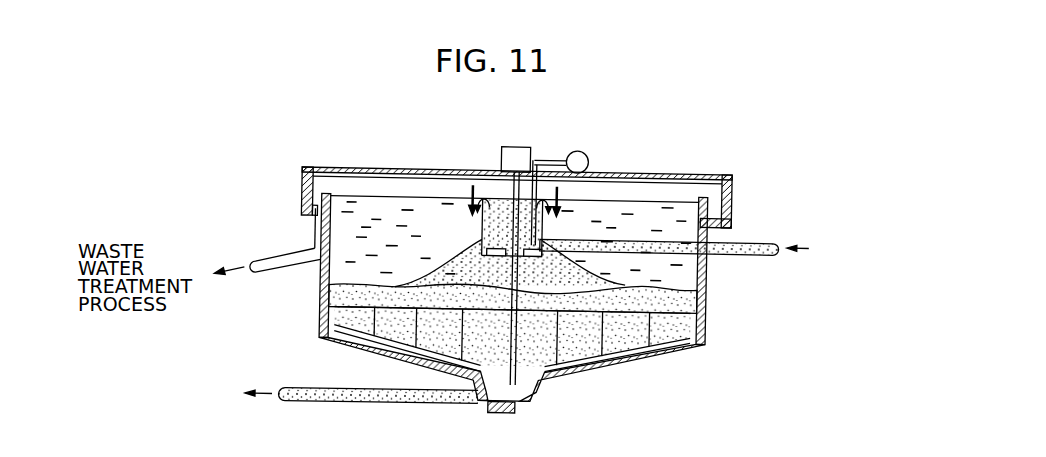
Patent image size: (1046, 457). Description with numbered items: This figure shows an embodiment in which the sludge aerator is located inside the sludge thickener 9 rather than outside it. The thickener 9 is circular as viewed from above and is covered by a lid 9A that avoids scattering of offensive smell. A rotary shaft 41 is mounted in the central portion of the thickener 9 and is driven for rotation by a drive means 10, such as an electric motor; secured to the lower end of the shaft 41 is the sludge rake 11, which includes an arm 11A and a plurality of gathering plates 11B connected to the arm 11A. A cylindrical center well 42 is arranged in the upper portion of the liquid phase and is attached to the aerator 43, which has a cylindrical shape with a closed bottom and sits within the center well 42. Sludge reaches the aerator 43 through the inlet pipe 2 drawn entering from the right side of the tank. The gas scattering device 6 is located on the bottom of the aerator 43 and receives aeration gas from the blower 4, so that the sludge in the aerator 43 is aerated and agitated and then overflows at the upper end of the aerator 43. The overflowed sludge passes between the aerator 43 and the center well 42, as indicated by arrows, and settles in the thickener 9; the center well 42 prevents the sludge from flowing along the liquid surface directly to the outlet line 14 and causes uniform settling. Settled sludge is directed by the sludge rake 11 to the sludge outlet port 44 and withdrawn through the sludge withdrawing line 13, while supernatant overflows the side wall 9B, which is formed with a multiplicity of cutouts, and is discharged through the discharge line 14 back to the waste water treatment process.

The raw water feed pipe 2 is at (750, 250).
The blower 4 is at (583, 154).
The gas scattering device 6 is at (546, 240).
The thickener 9 is at (706, 321).
The lid 9A is at (386, 171).
The side wall 9B is at (310, 204).
The drive means 10 is at (512, 147).
The sludge rake 11 is at (556, 364).
The arm 11A is at (601, 353).
The gathering plates 11B is at (641, 353).
The sludge withdrawing line 13 is at (364, 405).
The discharge line 14 is at (283, 271).
The rotary shaft 41 is at (520, 266).
The center well 42 is at (479, 214).
The aerator 43 is at (474, 229).
The sludge outlet port 44 is at (508, 402).